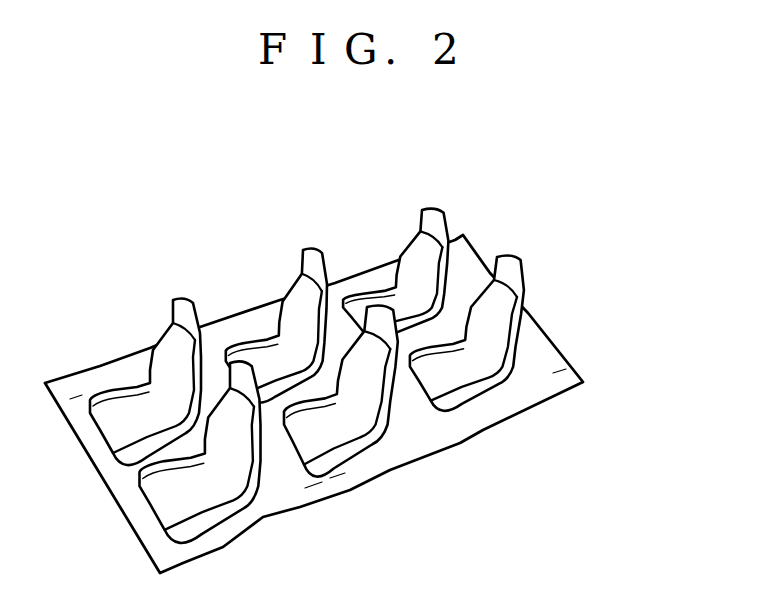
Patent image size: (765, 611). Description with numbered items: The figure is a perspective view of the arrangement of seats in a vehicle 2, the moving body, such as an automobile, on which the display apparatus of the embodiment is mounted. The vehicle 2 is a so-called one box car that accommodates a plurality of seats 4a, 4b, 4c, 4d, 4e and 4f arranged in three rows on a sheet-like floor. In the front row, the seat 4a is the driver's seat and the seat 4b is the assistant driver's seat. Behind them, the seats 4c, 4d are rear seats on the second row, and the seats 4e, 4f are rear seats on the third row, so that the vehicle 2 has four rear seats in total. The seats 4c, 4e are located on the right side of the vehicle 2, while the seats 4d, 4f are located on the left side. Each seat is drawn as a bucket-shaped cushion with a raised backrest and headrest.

The vehicle 2 is at (501, 218).
The driver's seat 4a is at (184, 300).
The assistant driver's seat 4b is at (250, 364).
The rear seat 4c is at (310, 251).
The rear seat 4d is at (393, 393).
The rear seat 4e is at (418, 217).
The rear seat 4f is at (520, 347).